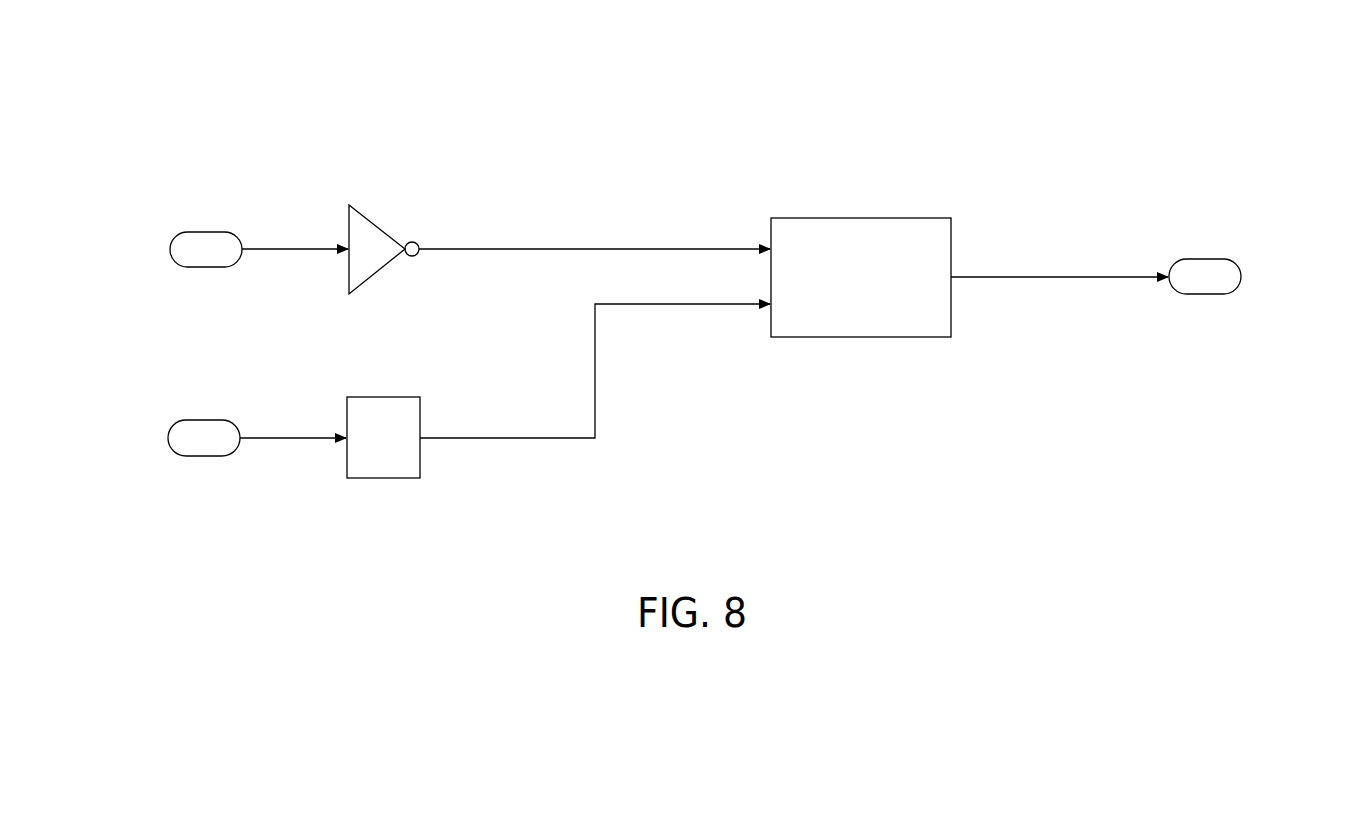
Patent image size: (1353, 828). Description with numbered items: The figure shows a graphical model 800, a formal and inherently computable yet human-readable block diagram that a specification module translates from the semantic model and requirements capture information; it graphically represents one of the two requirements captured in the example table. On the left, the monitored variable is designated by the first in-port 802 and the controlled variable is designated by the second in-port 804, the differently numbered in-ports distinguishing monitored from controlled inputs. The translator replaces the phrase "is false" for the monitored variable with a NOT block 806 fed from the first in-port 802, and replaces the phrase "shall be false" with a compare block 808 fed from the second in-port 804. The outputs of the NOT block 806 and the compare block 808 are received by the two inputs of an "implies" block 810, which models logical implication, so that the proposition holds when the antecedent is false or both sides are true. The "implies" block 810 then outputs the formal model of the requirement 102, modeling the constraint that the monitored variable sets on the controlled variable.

The graphical model 800 is at (168, 93).
The "1" in-port 802 is at (208, 230).
The "2" in-port 804 is at (198, 419).
The NOT block 806 is at (348, 205).
The compare block 808 is at (385, 396).
The "implies" block 810 is at (858, 217).
The formal model of the requirement 102 is at (1205, 258).